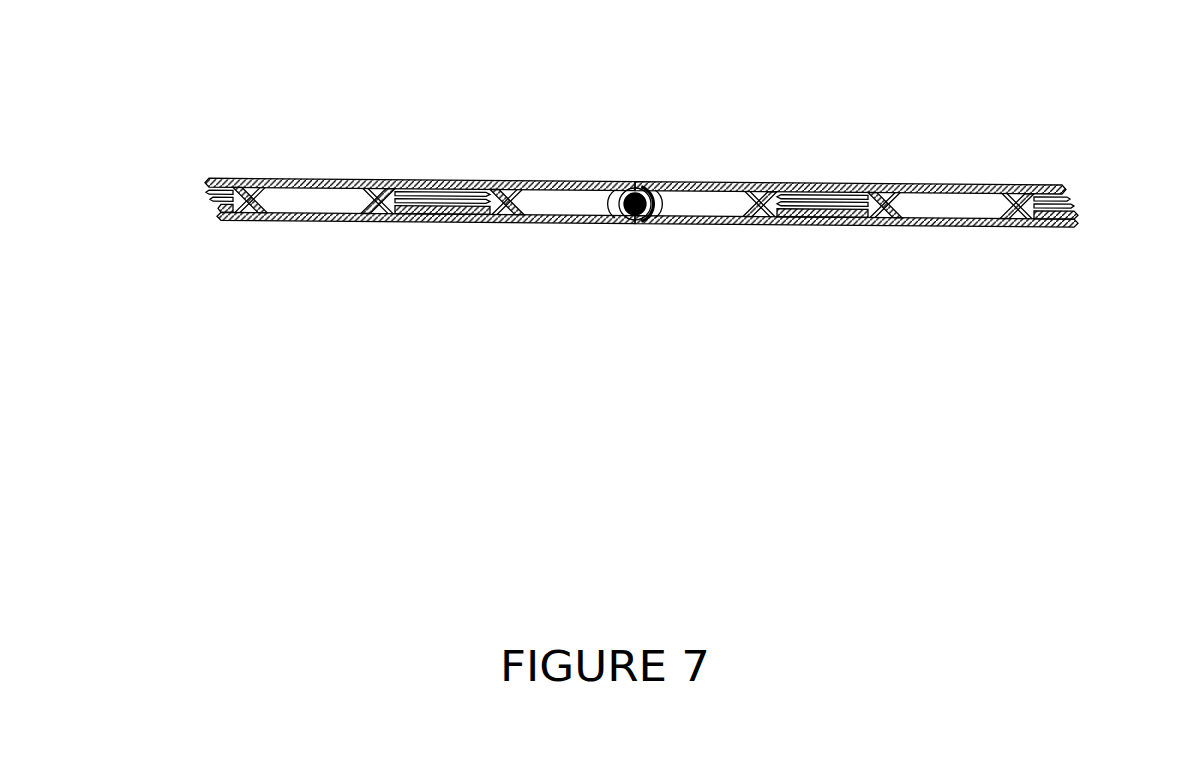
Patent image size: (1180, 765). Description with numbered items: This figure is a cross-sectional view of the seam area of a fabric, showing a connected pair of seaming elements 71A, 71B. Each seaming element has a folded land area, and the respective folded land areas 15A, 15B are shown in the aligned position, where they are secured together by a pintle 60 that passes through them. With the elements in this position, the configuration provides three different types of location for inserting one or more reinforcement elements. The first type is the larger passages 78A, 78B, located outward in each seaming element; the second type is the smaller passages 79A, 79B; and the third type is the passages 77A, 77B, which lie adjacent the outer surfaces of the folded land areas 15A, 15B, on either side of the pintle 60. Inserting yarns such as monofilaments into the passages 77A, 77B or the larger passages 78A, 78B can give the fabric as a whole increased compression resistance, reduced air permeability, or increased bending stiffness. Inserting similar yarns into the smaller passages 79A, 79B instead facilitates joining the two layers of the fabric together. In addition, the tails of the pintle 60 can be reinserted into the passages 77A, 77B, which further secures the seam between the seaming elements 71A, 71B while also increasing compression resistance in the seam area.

The seaming element 71A is at (366, 167).
The seaming element 71B is at (898, 173).
The passage 77A is at (566, 203).
The passage 77B is at (702, 203).
The larger passage 78A is at (327, 200).
The larger passage 78B is at (944, 203).
The smaller passage 79A is at (448, 200).
The smaller passage 79B is at (824, 202).
The folded land area 15A is at (687, 220).
The folded land area 15B is at (583, 220).
The pintle 60 is at (632, 220).